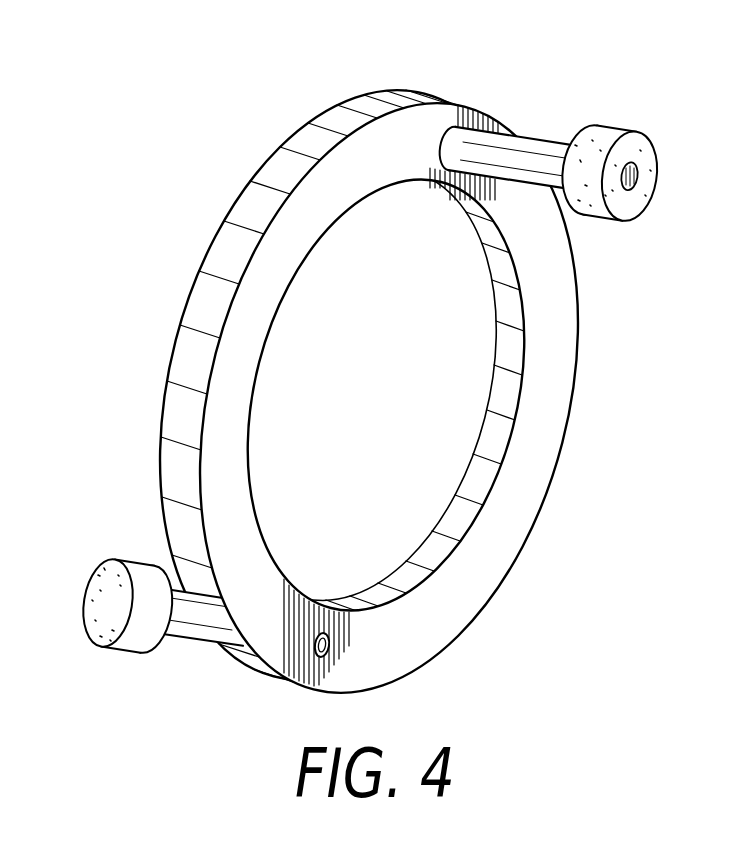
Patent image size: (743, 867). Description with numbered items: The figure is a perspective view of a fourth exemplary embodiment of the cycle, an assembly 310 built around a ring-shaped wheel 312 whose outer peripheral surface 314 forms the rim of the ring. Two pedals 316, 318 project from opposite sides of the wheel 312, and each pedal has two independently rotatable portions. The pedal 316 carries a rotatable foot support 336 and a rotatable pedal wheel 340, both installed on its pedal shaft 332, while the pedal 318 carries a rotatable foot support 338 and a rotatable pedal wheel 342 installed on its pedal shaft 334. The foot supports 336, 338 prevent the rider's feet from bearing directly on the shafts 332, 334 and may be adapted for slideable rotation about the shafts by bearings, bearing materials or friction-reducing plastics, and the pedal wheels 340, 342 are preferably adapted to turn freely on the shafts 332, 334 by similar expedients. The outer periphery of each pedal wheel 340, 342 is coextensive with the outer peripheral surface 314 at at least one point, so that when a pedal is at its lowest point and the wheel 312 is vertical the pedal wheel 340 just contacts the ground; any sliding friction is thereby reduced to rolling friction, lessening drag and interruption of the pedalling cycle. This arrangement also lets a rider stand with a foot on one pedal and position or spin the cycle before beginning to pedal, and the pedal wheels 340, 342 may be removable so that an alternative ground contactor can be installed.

The ring assembly 310 is at (328, 394).
The ring-shaped wheel 312 is at (252, 322).
The outer peripheral surface 314 is at (328, 411).
The pedal 316 is at (587, 155).
The pedal 318 is at (134, 665).
The pedal shaft 332 is at (648, 180).
The pedal shaft 334 is at (333, 648).
The rotatable foot support 336 is at (535, 138).
The rotatable foot support 338 is at (178, 636).
The rotatable pedal wheel 340 is at (647, 184).
The rotatable pedal wheel 342 is at (96, 637).